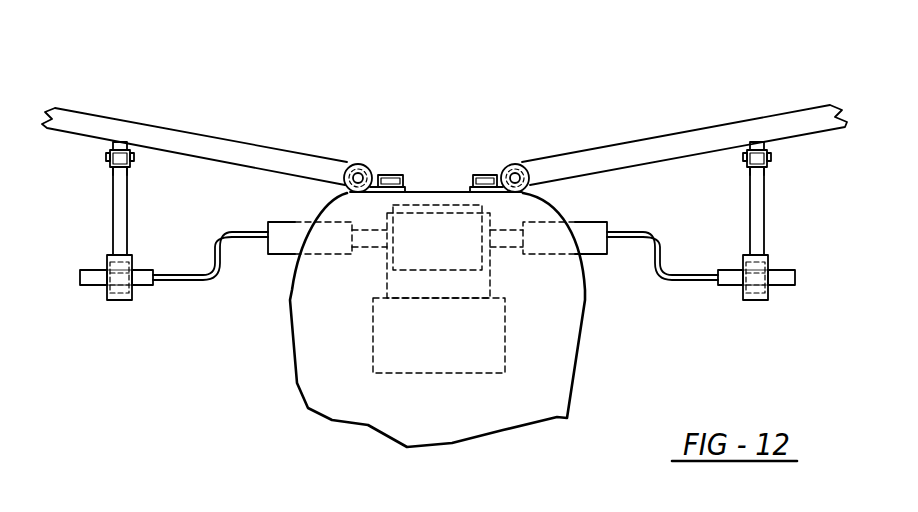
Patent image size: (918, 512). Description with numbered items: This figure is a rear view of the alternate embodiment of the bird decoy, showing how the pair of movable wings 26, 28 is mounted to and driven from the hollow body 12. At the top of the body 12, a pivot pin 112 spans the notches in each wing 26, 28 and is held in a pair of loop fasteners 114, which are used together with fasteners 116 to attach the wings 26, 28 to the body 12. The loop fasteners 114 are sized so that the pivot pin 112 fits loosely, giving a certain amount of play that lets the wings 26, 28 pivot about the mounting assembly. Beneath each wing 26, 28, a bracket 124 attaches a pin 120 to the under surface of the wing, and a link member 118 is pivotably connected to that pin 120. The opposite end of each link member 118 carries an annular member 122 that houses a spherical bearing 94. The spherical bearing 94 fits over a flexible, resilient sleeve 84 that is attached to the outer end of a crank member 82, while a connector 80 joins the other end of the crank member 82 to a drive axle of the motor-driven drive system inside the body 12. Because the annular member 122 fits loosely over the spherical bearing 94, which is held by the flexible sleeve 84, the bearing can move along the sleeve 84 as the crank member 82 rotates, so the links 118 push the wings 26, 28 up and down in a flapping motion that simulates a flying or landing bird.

The body 12 is at (582, 360).
The movable wing 26 is at (263, 146).
The movable wing 28 is at (664, 139).
The connector 80 is at (293, 245).
The crank member 82 is at (197, 283).
The flexible sleeve 84 is at (731, 278).
The spherical bearing 94 is at (110, 288).
The pivot pin 112 is at (360, 178).
The loop fastener 114 is at (465, 182).
The fastener 116 is at (405, 185).
The link member 118 is at (764, 205).
The pin 120 is at (107, 157).
The annular member 122 is at (117, 302).
The bracket 124 is at (115, 155).